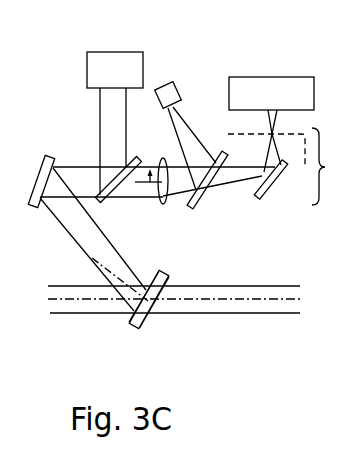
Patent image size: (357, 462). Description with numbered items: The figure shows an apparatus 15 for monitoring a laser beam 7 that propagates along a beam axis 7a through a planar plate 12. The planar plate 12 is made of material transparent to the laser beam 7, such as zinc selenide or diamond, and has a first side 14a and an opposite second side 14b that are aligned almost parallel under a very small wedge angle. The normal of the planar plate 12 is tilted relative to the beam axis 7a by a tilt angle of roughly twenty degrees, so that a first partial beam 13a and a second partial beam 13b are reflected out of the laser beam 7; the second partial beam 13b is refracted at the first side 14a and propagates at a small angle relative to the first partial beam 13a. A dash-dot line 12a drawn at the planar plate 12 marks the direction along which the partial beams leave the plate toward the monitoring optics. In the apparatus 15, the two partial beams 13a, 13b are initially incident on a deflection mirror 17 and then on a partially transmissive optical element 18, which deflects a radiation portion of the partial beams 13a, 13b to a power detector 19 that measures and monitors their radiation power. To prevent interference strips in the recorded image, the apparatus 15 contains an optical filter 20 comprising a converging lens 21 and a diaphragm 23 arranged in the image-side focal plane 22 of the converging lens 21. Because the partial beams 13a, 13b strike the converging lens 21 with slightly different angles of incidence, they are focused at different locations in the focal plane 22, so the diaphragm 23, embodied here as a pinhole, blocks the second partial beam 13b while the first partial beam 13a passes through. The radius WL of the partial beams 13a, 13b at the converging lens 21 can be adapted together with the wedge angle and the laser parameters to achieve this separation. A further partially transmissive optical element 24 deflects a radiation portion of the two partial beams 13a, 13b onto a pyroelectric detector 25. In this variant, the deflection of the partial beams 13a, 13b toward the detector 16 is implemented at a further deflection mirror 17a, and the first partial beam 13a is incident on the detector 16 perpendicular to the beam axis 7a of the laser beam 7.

The apparatus for monitoring the laser beam 15 is at (66, 86).
The power detector 19 is at (112, 62).
The pyroelectric detector 25 is at (166, 83).
The detector 16 is at (277, 88).
The first partial beam 13a is at (276, 126).
The second partial beam 13b is at (77, 215).
The diaphragm 23 is at (265, 133).
The image-side focal plane 22 is at (294, 160).
The optical filter 20 is at (331, 166).
The deflection mirror 17 is at (48, 156).
The partially transmissive optical element 18 is at (109, 164).
The radius of the partial beams WL is at (150, 151).
The converging lens 21 is at (163, 204).
The further partially transmissive optical element 24 is at (195, 208).
The further deflection mirror 17a is at (265, 198).
The laser beam 7 is at (88, 308).
The beam axis 7a is at (258, 297).
The planar plate 12 is at (137, 323).
The mirror axis / reflection point 12a is at (130, 304).
The first side 14a is at (162, 270).
The second side 14b is at (150, 318).